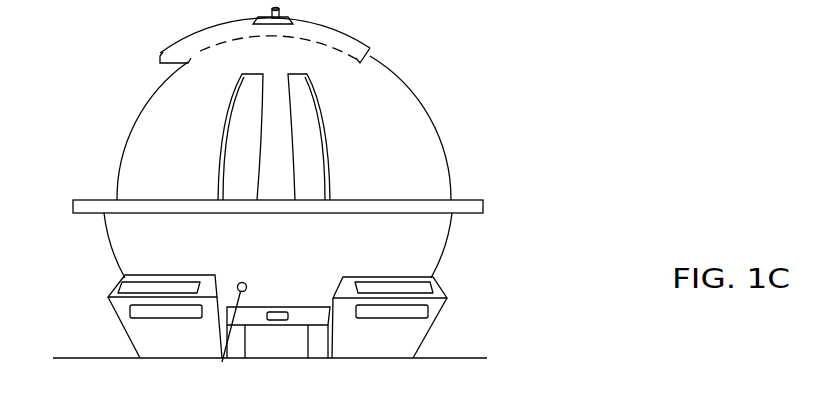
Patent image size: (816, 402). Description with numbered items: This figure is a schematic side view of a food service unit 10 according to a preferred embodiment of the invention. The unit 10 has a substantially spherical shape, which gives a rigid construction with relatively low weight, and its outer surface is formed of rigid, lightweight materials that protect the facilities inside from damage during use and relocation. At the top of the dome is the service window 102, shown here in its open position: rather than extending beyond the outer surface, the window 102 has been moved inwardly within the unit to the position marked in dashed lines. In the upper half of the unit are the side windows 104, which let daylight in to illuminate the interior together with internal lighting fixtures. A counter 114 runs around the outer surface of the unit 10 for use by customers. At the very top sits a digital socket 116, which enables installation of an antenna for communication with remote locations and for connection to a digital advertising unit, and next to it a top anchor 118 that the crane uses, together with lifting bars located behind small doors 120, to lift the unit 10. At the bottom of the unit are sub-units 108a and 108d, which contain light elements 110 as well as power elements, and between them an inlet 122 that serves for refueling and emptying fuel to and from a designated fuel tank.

The food service unit 10 is at (110, 94).
The service window 102 is at (213, 49).
The side windows 104 is at (247, 108).
The sub-unit 108a is at (158, 345).
The sub-unit 108d is at (397, 338).
The light elements 110 is at (143, 312).
The counter 114 is at (80, 205).
The digital socket 116 is at (270, 13).
The top anchor 118 is at (291, 22).
The small doors 120 is at (275, 321).
The inlet 122 is at (222, 362).